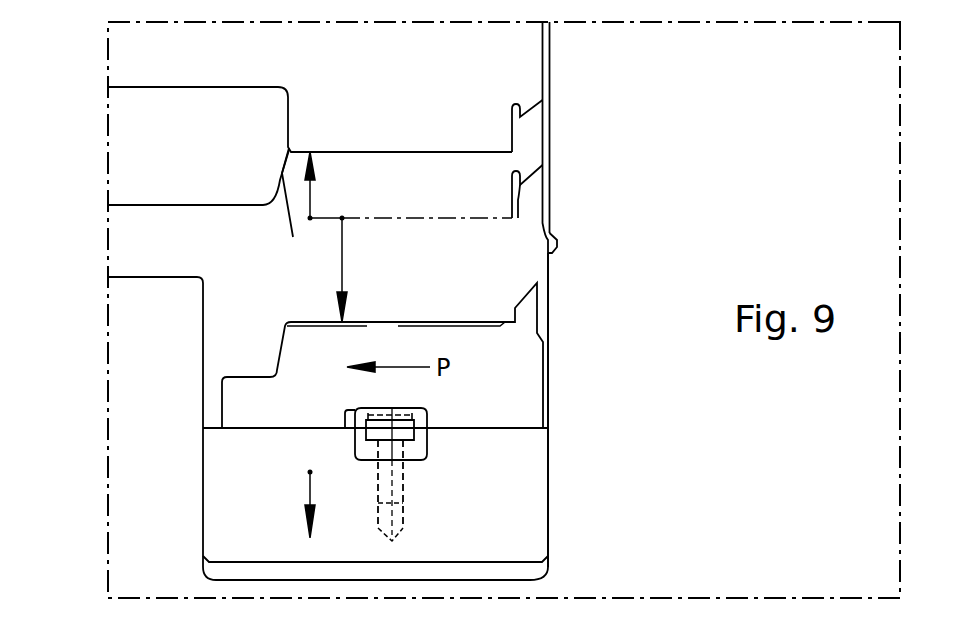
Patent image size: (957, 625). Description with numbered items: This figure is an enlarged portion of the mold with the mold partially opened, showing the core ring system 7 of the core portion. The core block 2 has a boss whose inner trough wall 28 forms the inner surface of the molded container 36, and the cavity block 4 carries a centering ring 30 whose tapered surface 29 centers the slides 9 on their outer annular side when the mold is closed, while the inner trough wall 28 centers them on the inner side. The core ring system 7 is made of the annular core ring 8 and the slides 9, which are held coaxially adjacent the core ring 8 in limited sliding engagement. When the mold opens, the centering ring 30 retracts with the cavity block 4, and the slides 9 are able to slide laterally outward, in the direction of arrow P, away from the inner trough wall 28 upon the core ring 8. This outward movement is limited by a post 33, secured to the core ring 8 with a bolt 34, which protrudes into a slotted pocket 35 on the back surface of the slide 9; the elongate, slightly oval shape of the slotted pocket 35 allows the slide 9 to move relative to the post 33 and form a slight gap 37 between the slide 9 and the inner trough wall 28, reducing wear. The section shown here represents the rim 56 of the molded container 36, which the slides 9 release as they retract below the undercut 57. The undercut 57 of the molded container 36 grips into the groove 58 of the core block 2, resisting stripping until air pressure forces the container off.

The core block 2 is at (167, 460).
The cavity block 4 is at (290, 50).
The core ring system 7 is at (686, 406).
The core ring 8 is at (498, 515).
The slides 9 is at (492, 403).
The inner trough wall 28 is at (548, 280).
The tapered surface 29 is at (293, 237).
The centering ring 30 is at (237, 139).
The post 33 is at (367, 452).
The bolt 34 is at (350, 425).
The slotted pocket 35 is at (368, 420).
The molded container 36 is at (547, 130).
The gap 37 is at (548, 378).
The rim 56 is at (526, 184).
The undercut 57 is at (554, 237).
The groove 58 is at (553, 250).